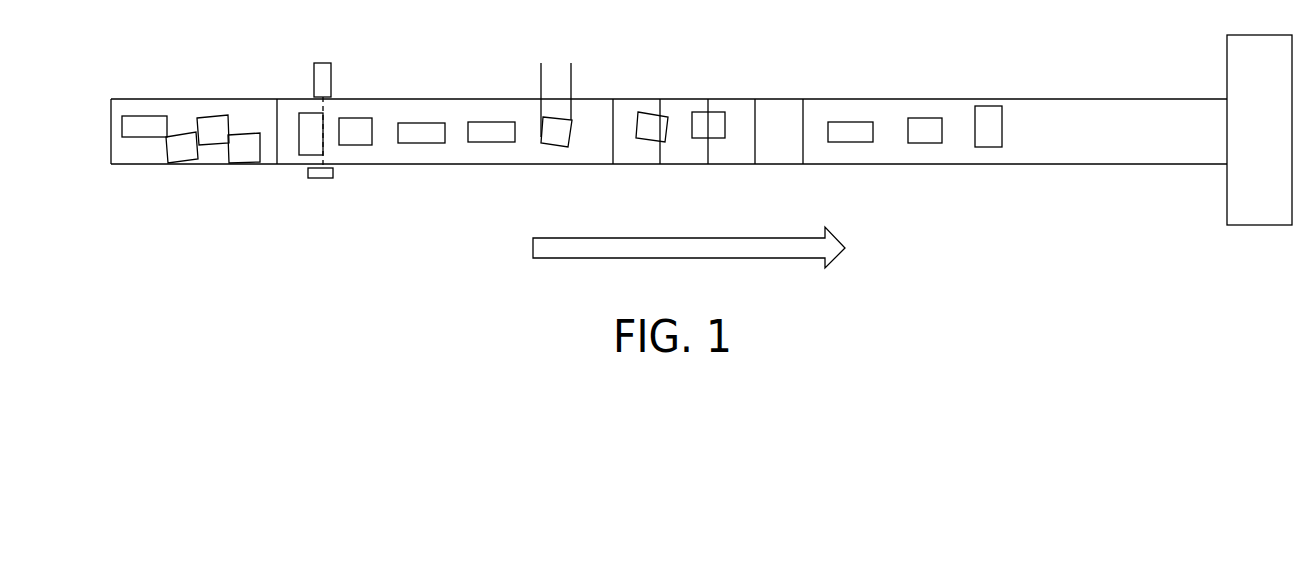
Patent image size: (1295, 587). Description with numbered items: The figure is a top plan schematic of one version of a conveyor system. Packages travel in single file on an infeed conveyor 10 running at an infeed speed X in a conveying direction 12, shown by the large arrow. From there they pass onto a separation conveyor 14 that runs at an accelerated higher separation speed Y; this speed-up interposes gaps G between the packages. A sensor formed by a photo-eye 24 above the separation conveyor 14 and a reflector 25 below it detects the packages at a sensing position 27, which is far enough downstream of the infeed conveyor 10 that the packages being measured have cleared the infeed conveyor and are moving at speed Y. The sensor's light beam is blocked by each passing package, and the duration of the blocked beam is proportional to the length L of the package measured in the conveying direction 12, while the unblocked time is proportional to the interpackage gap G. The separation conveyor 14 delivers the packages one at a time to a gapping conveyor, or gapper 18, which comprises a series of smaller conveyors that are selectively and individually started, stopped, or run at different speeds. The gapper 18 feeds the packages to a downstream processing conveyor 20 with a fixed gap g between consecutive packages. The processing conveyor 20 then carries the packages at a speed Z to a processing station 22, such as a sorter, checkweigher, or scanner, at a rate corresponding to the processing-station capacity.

The infeed conveyor 10 is at (140, 157).
The conveying direction 12 is at (722, 253).
The separation conveyor 14 is at (405, 157).
The gapping conveyor 18 is at (803, 94).
The processing conveyor 20 is at (957, 158).
The processing station 22 is at (1262, 220).
The photo-eye 24 is at (328, 73).
The reflector 25 is at (322, 180).
The sensing position 27 is at (343, 157).
The gap G is at (458, 140).
The length L is at (556, 101).
The fixed gap g is at (873, 142).